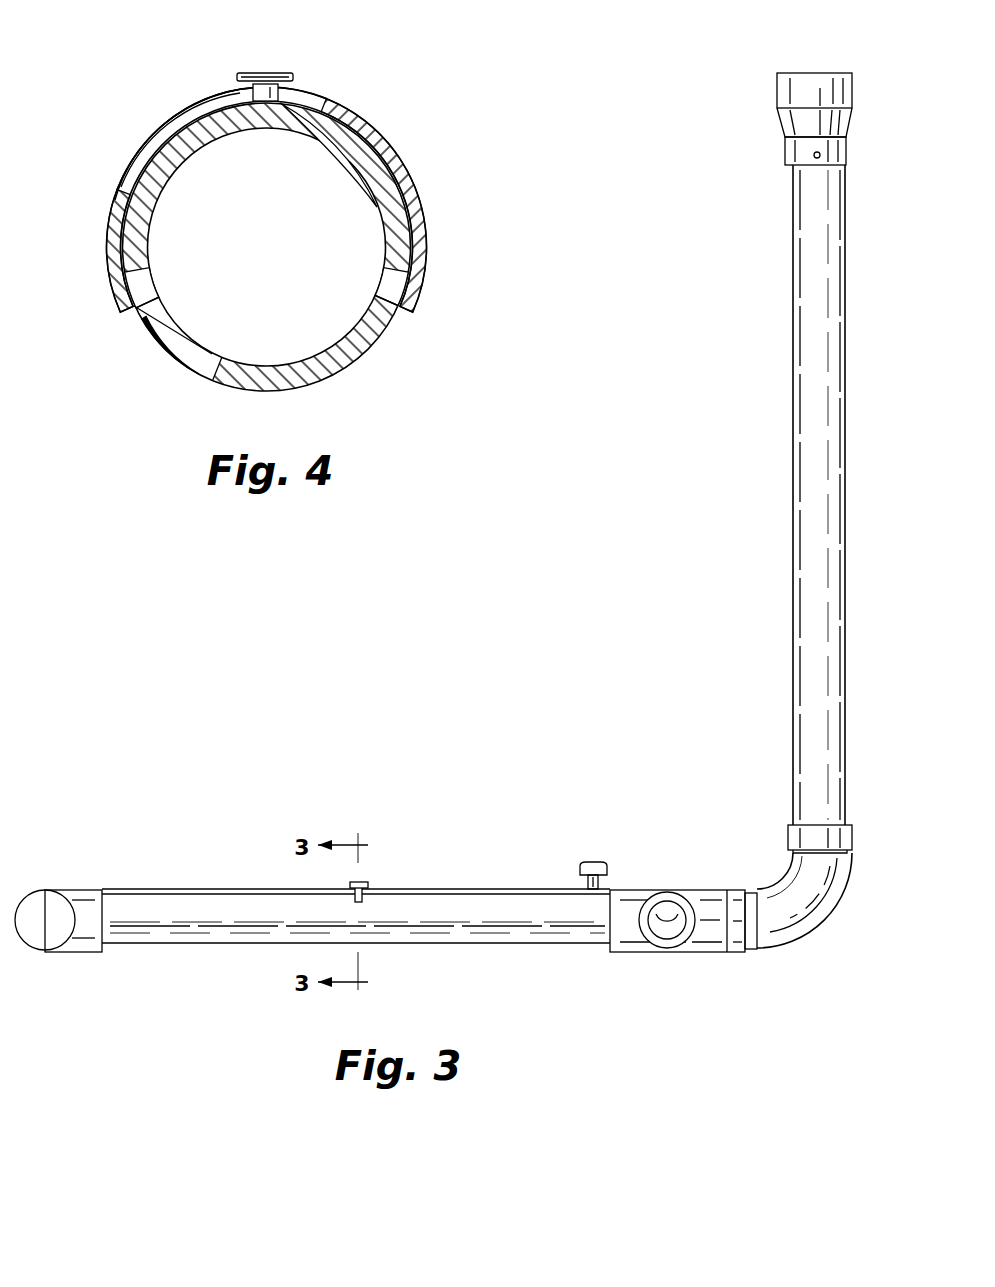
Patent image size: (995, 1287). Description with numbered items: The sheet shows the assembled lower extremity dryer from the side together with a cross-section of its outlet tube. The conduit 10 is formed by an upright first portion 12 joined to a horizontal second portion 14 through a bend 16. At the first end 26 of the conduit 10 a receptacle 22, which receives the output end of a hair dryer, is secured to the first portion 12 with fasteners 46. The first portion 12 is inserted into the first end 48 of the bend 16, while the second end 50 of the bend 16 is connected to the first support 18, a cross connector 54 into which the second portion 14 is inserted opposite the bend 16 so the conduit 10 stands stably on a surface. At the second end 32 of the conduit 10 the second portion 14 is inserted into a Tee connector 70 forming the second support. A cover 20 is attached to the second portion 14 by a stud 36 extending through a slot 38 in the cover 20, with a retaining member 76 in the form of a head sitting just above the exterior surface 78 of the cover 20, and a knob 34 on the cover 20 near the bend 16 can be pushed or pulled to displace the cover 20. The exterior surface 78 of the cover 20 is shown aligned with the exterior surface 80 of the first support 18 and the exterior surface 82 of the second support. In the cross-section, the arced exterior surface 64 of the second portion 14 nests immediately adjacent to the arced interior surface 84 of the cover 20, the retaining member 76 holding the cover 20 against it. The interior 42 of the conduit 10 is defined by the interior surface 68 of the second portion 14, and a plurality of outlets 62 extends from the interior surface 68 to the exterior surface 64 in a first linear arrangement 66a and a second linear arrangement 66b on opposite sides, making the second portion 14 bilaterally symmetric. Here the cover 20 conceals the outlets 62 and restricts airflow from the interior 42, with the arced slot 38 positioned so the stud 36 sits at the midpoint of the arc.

In FIG. 4, the conduit 10 is at (142, 374).
In FIG. 3, the conduit 10 is at (647, 603).
In FIG. 3, the first portion 12 is at (793, 470).
In FIG. 4, the second portion 14 is at (328, 371).
In FIG. 3, the second portion 14 is at (432, 943).
In FIG. 3, the bend 16 is at (820, 924).
In FIG. 3, the first support 18 is at (657, 960).
In FIG. 4, the cover 20 is at (353, 118).
In FIG. 3, the cover 20 is at (492, 892).
In FIG. 3, the receptacle 22 is at (777, 95).
In FIG. 3, the first end 26 is at (781, 176).
In FIG. 3, the second end 32 is at (108, 960).
In FIG. 3, the knob 34 is at (595, 870).
In FIG. 4, the stud 36 is at (251, 92).
In FIG. 3, the stud 36 is at (356, 891).
In FIG. 4, the slot 38 is at (208, 100).
In FIG. 3, the slot 38 is at (363, 900).
In FIG. 4, the interior 42 is at (277, 255).
In FIG. 3, the fasteners 46 is at (813, 156).
In FIG. 3, the first end of the bend 48 is at (785, 812).
In FIG. 3, the second end of the bend 50 is at (729, 959).
In FIG. 3, the cross connector 54 is at (640, 890).
In FIG. 4, the outlets 62 is at (150, 289).
In FIG. 4, the exterior surface of the second portion 64 is at (411, 222).
In FIG. 4, the first linear arrangement 66a is at (160, 274).
In FIG. 4, the second linear arrangement 66b is at (369, 276).
In FIG. 4, the interior surface 68 is at (206, 345).
In FIG. 3, the Tee connector 70 is at (75, 893).
In FIG. 4, the retaining member 76 is at (272, 73).
In FIG. 3, the retaining member 76 is at (363, 883).
In FIG. 4, the exterior surface of the cover 78 is at (328, 87).
In FIG. 3, the exterior surface of the cover 78 is at (420, 920).
In FIG. 3, the exterior surface of the first support 80 is at (613, 930).
In FIG. 3, the exterior surface of the second support 82 is at (76, 929).
In FIG. 4, the interior surface of the cover 84 is at (357, 148).